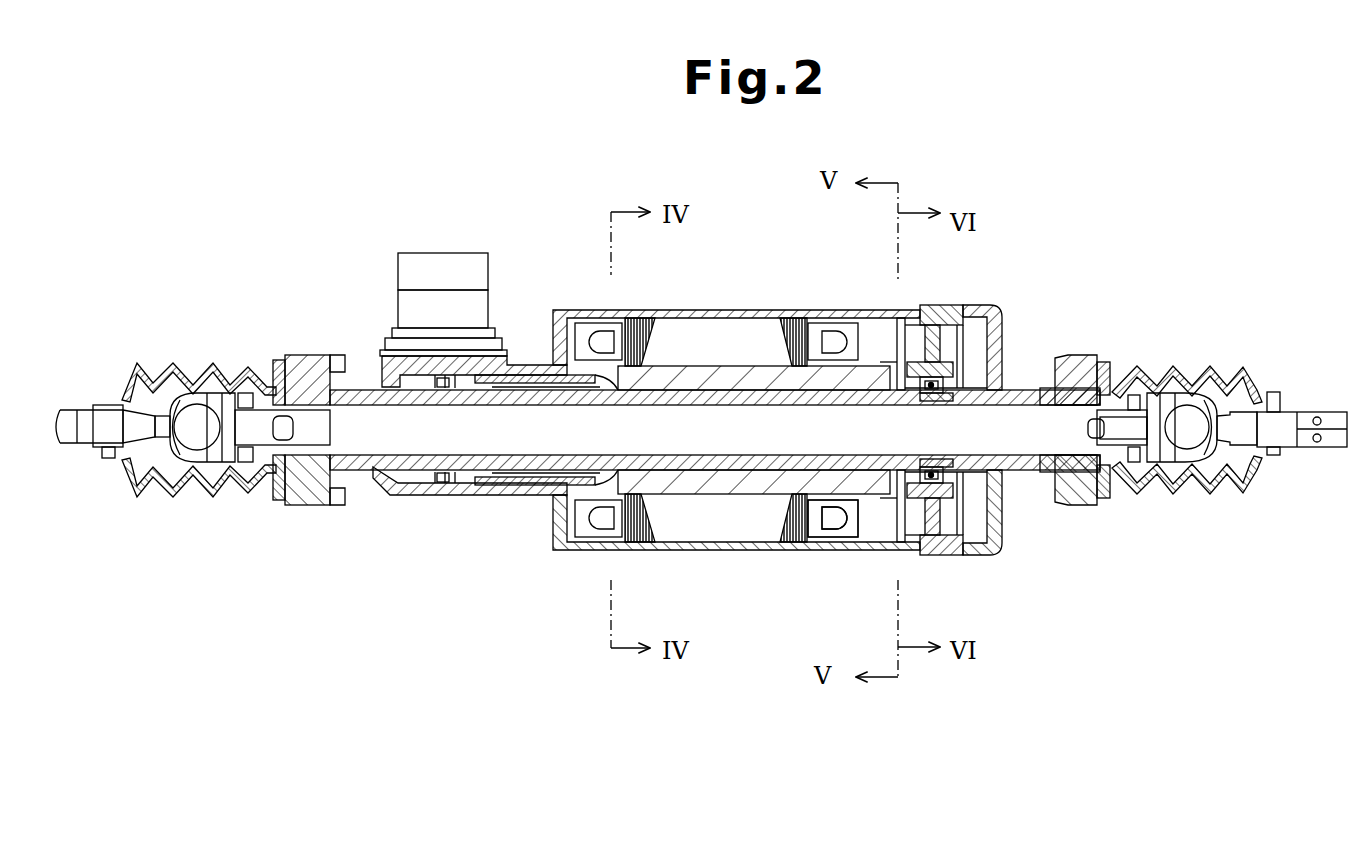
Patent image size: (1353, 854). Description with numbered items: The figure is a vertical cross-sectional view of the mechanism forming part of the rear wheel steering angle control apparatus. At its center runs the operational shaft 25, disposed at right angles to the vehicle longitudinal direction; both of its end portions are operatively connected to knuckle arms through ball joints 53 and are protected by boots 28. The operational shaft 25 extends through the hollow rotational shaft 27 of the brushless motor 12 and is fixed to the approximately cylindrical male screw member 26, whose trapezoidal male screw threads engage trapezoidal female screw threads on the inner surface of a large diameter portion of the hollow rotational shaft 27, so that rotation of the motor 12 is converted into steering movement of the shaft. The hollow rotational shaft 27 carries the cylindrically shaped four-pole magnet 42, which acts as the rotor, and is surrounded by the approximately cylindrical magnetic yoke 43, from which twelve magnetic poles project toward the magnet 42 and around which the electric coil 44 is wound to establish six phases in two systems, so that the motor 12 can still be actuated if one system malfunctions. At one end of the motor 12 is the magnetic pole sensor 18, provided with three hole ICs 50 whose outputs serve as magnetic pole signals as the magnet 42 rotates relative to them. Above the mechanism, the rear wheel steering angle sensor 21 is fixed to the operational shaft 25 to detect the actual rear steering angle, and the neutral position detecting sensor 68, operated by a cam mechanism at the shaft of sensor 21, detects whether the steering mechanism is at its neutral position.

The motor 12 is at (783, 305).
The magnetic pole sensor 18 is at (884, 522).
The rear wheel steering angle sensor 21 is at (403, 311).
The operational shaft 25 is at (684, 434).
The male screw member 26 is at (462, 468).
The hollow rotational shaft 27 is at (676, 400).
The boot 28 is at (166, 488).
The magnet 42 is at (723, 378).
The magnetic yoke 43 is at (713, 548).
The electric coil 44 is at (829, 530).
The hole IC 50 is at (872, 508).
The ball joint 53 is at (185, 418).
The neutral position detecting sensor 68 is at (403, 268).